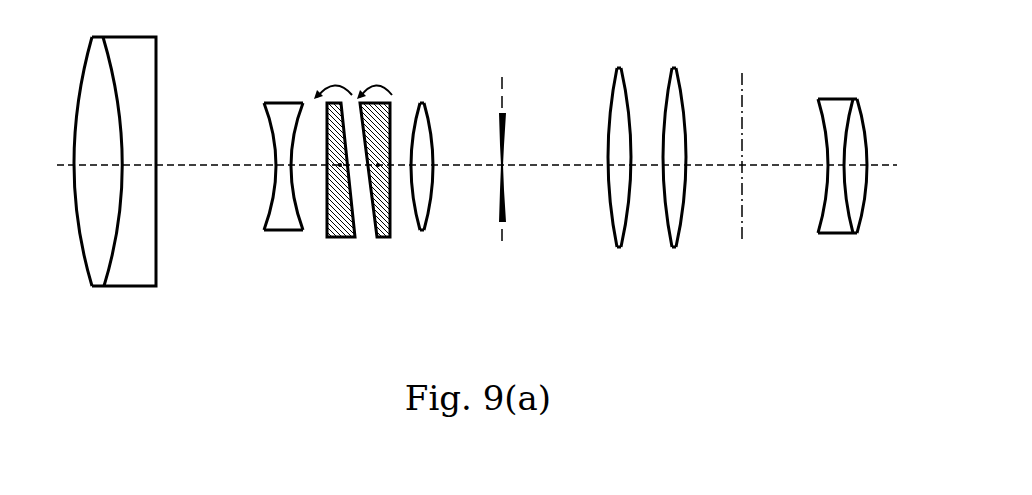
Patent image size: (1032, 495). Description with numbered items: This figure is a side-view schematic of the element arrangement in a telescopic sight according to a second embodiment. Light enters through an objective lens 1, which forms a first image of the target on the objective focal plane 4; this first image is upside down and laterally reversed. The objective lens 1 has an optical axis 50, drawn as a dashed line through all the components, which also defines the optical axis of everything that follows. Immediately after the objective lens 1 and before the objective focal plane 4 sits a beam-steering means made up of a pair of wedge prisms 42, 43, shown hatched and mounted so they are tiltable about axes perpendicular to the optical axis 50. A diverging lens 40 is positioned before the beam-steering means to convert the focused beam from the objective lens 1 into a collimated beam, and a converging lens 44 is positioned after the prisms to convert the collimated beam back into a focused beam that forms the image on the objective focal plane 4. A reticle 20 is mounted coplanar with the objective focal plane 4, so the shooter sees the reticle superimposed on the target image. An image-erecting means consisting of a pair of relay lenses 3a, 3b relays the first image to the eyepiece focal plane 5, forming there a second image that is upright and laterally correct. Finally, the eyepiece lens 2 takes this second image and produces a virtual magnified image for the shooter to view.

The objective lens 1 is at (156, 263).
The optical axis 50 is at (168, 165).
The diverging lens 40 is at (287, 232).
The wedge prism 42 is at (350, 237).
The wedge prism 43 is at (383, 237).
The converging lens 44 is at (423, 230).
The objective focal plane 4 is at (502, 77).
The reticle 20 is at (504, 118).
The relay lens 3a is at (615, 233).
The relay lens 3b is at (668, 225).
The eyepiece focal plane 5 is at (742, 243).
The eyepiece lens 2 is at (833, 233).